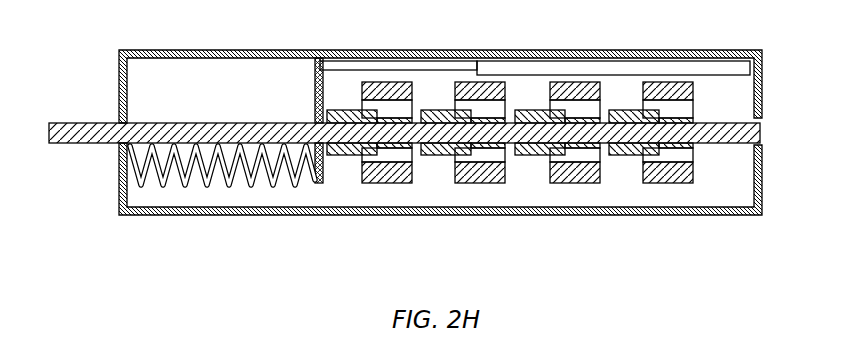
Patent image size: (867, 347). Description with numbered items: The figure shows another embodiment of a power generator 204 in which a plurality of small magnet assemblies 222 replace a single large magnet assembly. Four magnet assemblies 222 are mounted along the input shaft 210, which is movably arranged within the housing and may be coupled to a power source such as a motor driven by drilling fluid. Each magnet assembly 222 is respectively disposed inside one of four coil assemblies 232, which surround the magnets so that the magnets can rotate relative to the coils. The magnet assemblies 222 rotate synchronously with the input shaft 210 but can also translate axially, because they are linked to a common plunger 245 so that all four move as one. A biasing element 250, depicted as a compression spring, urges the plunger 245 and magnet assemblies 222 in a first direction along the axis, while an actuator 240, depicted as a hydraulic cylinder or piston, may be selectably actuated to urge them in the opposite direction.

The power generator 204 is at (412, 24).
The input shaft 210 is at (80, 130).
The magnet assemblies 222 is at (342, 155).
The coil assemblies 232 is at (383, 183).
The actuator 240 is at (609, 68).
The plunger 245 is at (315, 59).
The biasing element 250 is at (273, 183).